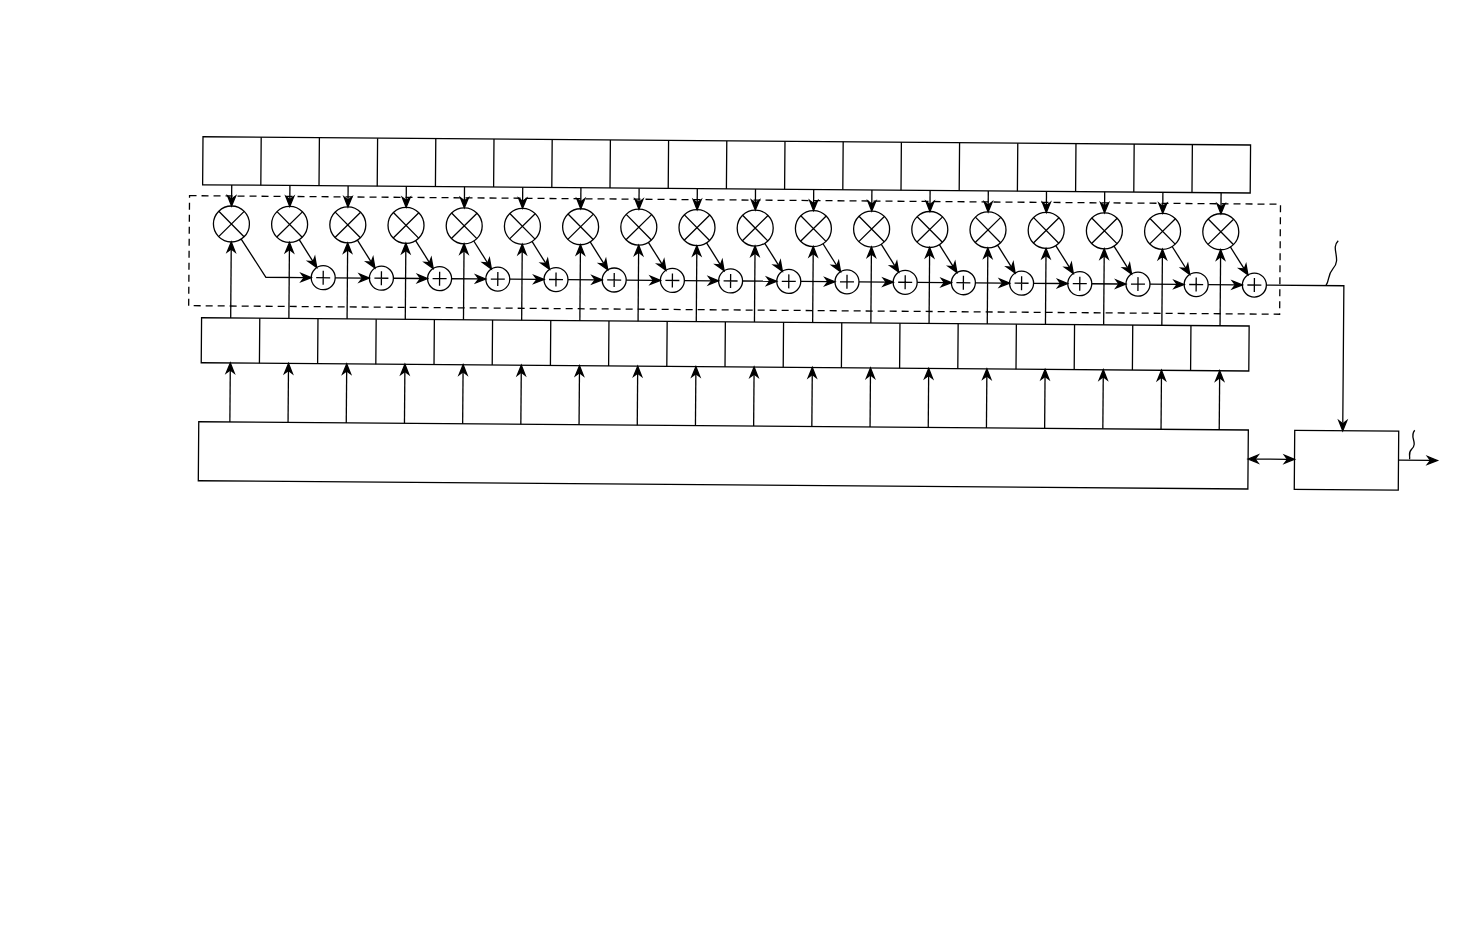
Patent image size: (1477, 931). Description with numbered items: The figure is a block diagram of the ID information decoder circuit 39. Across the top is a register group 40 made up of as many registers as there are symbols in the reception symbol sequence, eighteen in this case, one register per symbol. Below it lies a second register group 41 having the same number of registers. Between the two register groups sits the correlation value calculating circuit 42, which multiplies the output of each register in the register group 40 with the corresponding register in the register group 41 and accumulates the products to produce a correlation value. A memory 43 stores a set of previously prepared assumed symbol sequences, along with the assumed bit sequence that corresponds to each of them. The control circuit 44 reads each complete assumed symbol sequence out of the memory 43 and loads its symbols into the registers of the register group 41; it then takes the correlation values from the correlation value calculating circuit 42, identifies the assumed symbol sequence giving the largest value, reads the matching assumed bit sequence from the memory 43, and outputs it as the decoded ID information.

The ID information decoder circuit 39 is at (546, 57).
The register group 40 is at (737, 121).
The register group 41 is at (196, 388).
The correlation value calculating circuit 42 is at (188, 214).
The memory 43 is at (201, 460).
The control circuit 44 is at (1347, 481).